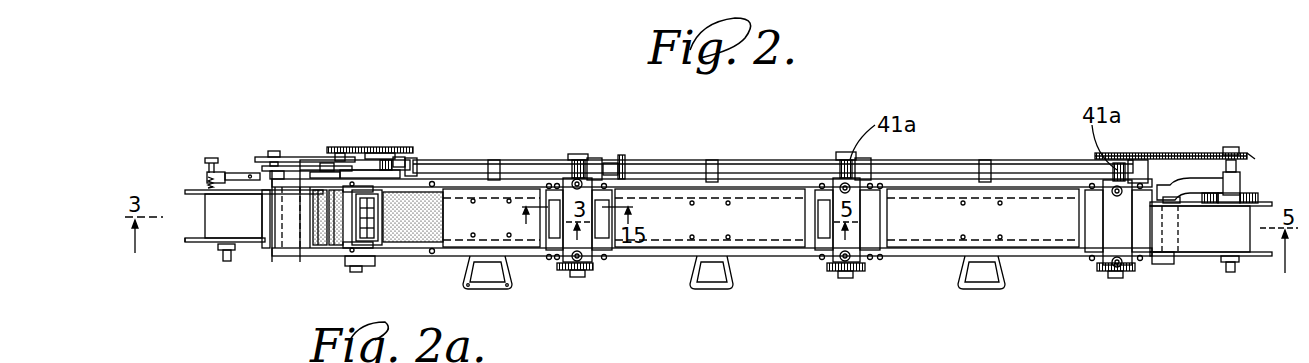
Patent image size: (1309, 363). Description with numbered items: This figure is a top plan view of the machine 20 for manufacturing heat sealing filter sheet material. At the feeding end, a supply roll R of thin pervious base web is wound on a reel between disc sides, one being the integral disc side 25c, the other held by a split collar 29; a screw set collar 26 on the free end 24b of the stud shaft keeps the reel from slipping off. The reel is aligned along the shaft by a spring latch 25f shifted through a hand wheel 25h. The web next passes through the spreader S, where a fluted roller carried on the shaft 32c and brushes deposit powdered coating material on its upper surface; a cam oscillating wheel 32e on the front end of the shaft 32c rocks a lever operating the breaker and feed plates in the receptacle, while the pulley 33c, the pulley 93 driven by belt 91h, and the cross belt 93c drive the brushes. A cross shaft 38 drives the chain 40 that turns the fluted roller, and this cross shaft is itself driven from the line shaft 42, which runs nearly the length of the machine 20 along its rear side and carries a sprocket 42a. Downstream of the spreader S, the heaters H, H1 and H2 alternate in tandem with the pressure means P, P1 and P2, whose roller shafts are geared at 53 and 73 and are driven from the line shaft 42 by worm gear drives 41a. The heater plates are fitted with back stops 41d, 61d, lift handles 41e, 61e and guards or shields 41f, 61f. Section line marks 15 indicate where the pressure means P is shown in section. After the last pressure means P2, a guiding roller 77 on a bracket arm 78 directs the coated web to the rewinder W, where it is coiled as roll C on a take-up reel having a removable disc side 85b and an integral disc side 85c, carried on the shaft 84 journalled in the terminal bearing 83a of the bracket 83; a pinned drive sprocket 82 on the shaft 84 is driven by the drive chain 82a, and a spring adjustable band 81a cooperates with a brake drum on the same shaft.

The conveyor section 15 is at (533, 227).
The machine 20 is at (831, 149).
The free end of stud shaft 24b is at (230, 262).
The disc side 25c is at (200, 190).
The spring latch 25f is at (218, 175).
The hand wheel 25h is at (211, 158).
The screw set collar 26 is at (223, 252).
The split collar 29 is at (215, 246).
The fluted roller shaft 32c is at (321, 248).
The cam oscillating wheel 32e is at (362, 262).
The pulley 33c is at (398, 157).
The cross shaft 38 is at (417, 162).
The chain 40 is at (378, 147).
The worm gear drive 41a is at (575, 158).
The back stop 41d is at (495, 160).
The lift handle 41e is at (490, 289).
The guard or shield 41f is at (510, 207).
The line shaft 42 is at (692, 162).
The sprocket 42a is at (622, 156).
The gearing 53 is at (568, 277).
The back stop 61d is at (713, 168).
The handle 61e is at (712, 289).
The guard or shield 61f is at (768, 208).
The gearing 73 is at (832, 272).
The guiding roller 77 is at (1177, 264).
The bracket arm 78 is at (1163, 270).
The guide plate 81a is at (1250, 195).
The drive sprocket 82 is at (1240, 175).
The drive chain 82a is at (1180, 153).
The bracket 83 is at (1197, 185).
The terminal bearing 83a is at (1232, 184).
The stud shaft 84 is at (1232, 147).
The removable disc side 85b is at (1254, 258).
The disc side 85c is at (1243, 275).
The belt 91h is at (312, 166).
The pulley 93 is at (272, 151).
The cross belt 93c is at (326, 163).
The roll C is at (1252, 220).
The heater H is at (518, 265).
The heater H1 is at (748, 265).
The heater H2 is at (1020, 270).
The pressure means P is at (589, 276).
The pressure means P1 is at (850, 285).
The pressure means P2 is at (1132, 285).
The supply roll R is at (205, 222).
The spreader S is at (381, 224).
The rewinder W is at (1242, 270).